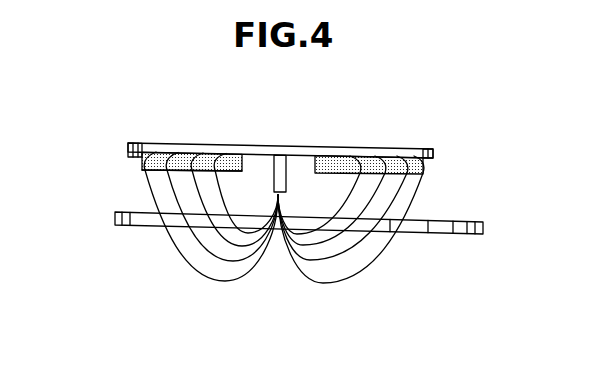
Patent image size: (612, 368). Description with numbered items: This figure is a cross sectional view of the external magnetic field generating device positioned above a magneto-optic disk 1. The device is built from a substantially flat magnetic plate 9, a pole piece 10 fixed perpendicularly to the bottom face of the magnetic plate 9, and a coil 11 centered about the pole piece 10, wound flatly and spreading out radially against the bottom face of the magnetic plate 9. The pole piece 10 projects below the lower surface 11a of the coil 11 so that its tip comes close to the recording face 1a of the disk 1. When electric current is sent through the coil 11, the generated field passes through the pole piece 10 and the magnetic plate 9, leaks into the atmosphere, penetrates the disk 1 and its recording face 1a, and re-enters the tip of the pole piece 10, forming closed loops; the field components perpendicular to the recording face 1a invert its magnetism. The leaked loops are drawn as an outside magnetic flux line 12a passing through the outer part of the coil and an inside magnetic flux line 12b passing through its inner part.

The magneto-optic disk 1 is at (492, 222).
The recording face 1a is at (457, 245).
The magnetic plate 9 is at (322, 145).
The pole piece 10 is at (288, 183).
The coil 11 is at (133, 157).
The lower surface of coil 11a is at (140, 170).
The outside magnetic flux line 12a is at (380, 252).
The inside magnetic flux line 12b is at (343, 229).